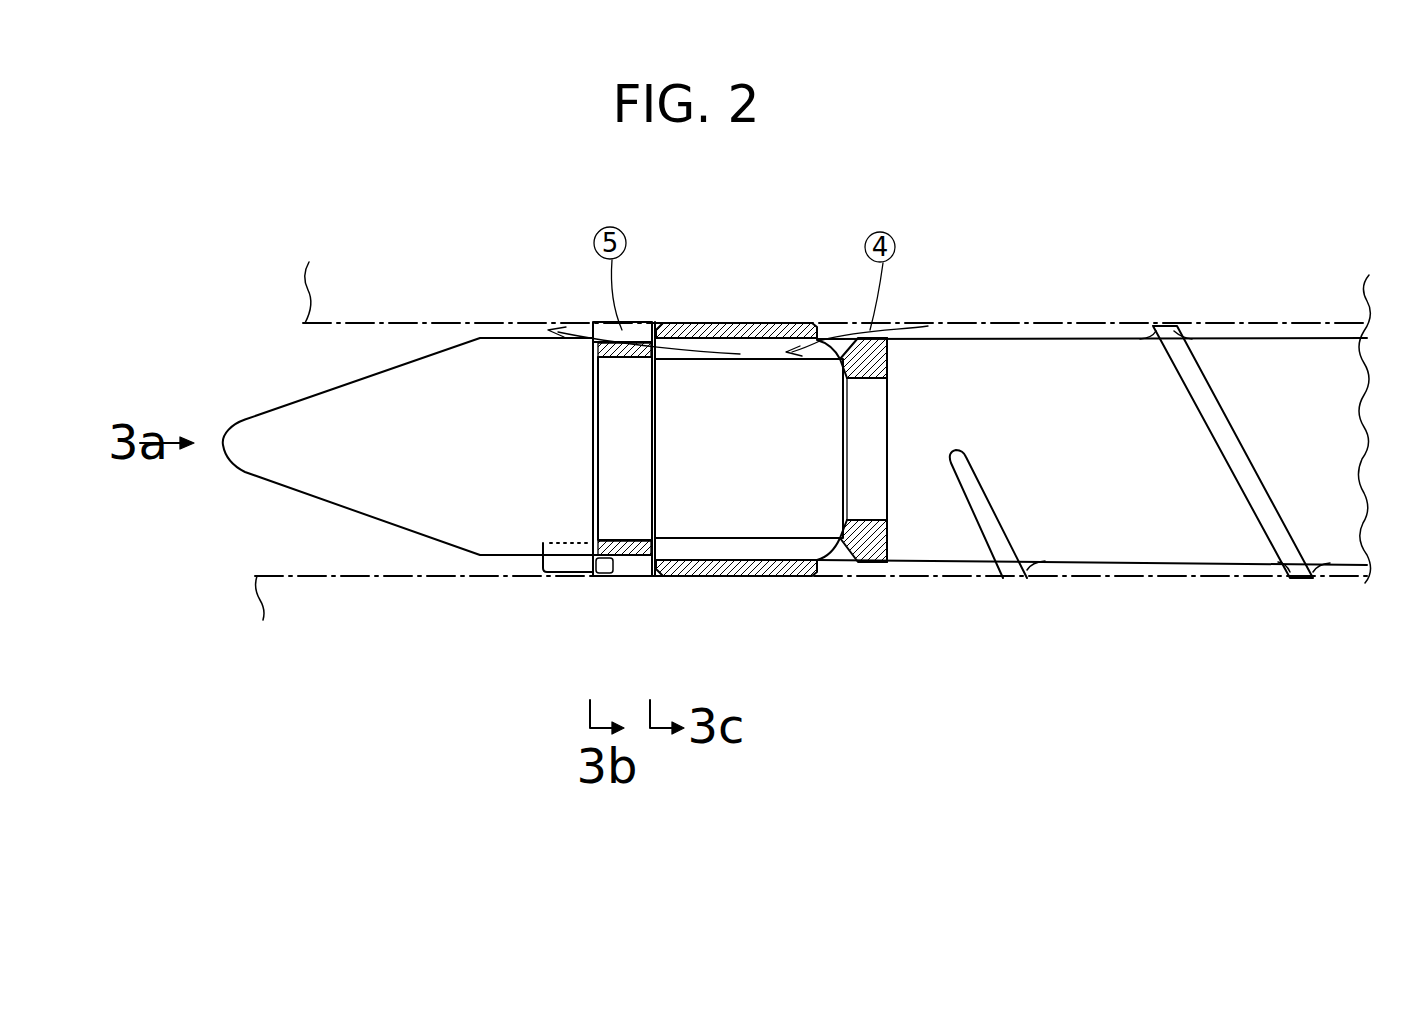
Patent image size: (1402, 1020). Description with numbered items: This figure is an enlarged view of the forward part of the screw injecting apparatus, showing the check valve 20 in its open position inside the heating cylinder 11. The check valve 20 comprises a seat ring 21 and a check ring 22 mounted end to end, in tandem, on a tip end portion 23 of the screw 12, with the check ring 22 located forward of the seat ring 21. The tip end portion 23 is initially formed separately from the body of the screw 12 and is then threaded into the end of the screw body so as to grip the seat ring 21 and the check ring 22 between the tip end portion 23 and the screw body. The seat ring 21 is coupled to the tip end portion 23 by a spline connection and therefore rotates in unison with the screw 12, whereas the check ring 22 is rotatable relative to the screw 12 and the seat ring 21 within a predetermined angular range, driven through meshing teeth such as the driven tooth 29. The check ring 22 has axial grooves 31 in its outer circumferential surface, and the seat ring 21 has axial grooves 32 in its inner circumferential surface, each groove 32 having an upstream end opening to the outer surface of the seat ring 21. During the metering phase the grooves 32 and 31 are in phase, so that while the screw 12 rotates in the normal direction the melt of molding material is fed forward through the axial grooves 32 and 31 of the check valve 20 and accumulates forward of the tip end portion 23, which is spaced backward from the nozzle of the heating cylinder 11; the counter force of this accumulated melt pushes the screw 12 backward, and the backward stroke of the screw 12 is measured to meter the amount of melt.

The heating cylinder 11 is at (1003, 322).
The screw 12 is at (1112, 570).
The check valve 20 is at (826, 686).
The seat ring 21 is at (658, 607).
The check ring 22 is at (590, 607).
The tip end portion 23 is at (310, 397).
The driven tooth 29 is at (542, 558).
The axial grooves 31 is at (645, 335).
The axial grooves 32 is at (731, 345).